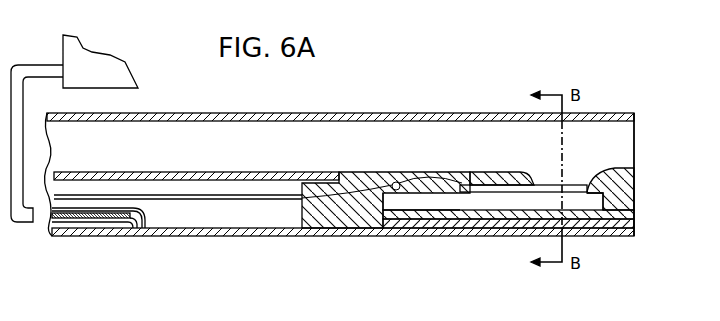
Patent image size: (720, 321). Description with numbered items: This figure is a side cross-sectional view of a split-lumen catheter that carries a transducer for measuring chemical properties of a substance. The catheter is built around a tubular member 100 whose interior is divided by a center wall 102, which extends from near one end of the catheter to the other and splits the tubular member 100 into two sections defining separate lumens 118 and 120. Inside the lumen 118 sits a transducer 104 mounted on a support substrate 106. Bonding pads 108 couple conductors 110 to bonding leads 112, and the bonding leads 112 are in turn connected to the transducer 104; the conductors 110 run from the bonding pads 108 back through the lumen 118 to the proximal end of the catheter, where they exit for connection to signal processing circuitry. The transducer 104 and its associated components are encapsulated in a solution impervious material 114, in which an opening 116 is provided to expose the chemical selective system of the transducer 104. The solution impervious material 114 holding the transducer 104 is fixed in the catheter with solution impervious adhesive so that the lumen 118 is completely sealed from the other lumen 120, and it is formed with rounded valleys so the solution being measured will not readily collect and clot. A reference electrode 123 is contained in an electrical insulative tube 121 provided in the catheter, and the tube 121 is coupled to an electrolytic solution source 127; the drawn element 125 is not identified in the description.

The tubular member 100 is at (243, 233).
The center wall 102 is at (243, 171).
The transducer 104 is at (513, 190).
The support substrate 106 is at (450, 215).
The bonding pads 108 is at (398, 206).
The conductors 110 is at (299, 231).
The bonding leads 112 is at (433, 184).
The solution impervious material 114 is at (620, 205).
The opening 116 is at (572, 181).
The lumen 118 is at (178, 214).
The lumen 120 is at (168, 147).
The electrical insulative tube 121 is at (144, 224).
The reference electrode 123 is at (82, 220).
The wire 125 is at (133, 223).
The electrolytic solution source 127 is at (108, 70).